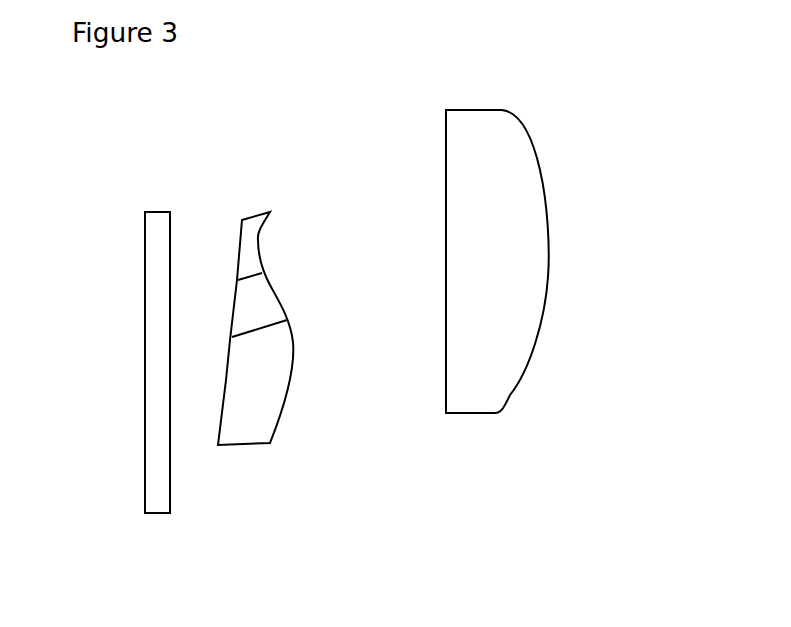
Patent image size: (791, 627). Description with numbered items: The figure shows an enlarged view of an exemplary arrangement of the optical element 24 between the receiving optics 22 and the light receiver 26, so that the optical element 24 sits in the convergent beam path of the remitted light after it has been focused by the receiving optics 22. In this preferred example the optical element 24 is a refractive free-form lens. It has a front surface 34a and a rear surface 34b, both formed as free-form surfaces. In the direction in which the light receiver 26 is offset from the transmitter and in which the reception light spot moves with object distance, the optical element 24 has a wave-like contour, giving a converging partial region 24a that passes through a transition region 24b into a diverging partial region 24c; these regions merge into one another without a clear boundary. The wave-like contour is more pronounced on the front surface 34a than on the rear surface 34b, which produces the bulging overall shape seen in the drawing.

The receiving optics 22 is at (460, 239).
The optical element 24 is at (255, 283).
The converging partial region 24a is at (294, 401).
The transition region 24b is at (292, 305).
The diverging partial region 24c is at (292, 244).
The light receiver 26 is at (106, 362).
The front surface 34a is at (322, 364).
The rear surface 34b is at (207, 307).